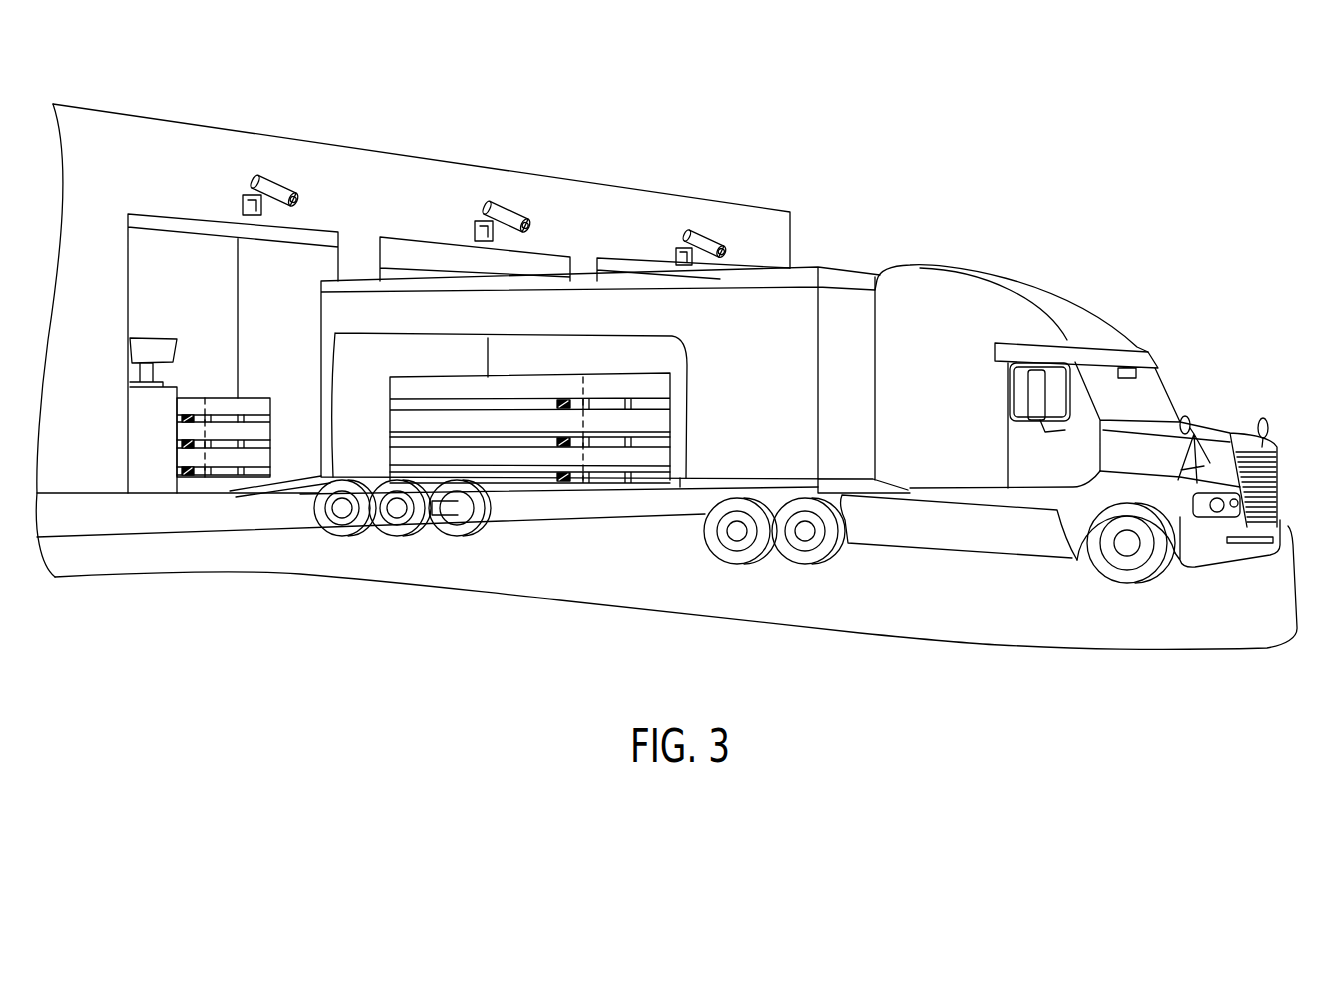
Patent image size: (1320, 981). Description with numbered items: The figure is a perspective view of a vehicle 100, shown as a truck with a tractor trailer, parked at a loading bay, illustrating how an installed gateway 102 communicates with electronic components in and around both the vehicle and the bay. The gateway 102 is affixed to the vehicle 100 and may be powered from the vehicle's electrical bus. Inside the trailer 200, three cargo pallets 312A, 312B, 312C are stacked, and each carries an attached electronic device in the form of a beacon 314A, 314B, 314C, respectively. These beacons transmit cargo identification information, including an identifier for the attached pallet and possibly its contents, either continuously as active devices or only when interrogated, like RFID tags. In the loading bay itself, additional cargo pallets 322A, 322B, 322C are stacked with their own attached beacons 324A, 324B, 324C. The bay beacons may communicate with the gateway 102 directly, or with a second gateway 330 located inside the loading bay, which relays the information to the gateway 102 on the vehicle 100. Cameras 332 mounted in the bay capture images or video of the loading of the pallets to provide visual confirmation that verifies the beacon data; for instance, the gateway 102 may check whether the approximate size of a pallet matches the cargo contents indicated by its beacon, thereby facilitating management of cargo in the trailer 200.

The vehicle 100 is at (1057, 297).
The gateway 102 is at (1137, 380).
The trailer 200 is at (857, 268).
The cargo pallet 312A is at (400, 388).
The cargo pallet 312B is at (400, 420).
The cargo pallet 312C is at (400, 452).
The electronic device (beacon) 314A is at (573, 402).
The electronic device (beacon) 314B is at (572, 441).
The electronic device (beacon) 314C is at (572, 478).
The cargo pallet 322A is at (238, 408).
The cargo pallet 322B is at (227, 430).
The cargo pallet 322C is at (227, 463).
The beacon 324A is at (185, 420).
The beacon 324B is at (185, 447).
The beacon 324C is at (185, 475).
The second gateway 330 is at (137, 355).
The cameras 332 is at (290, 192).